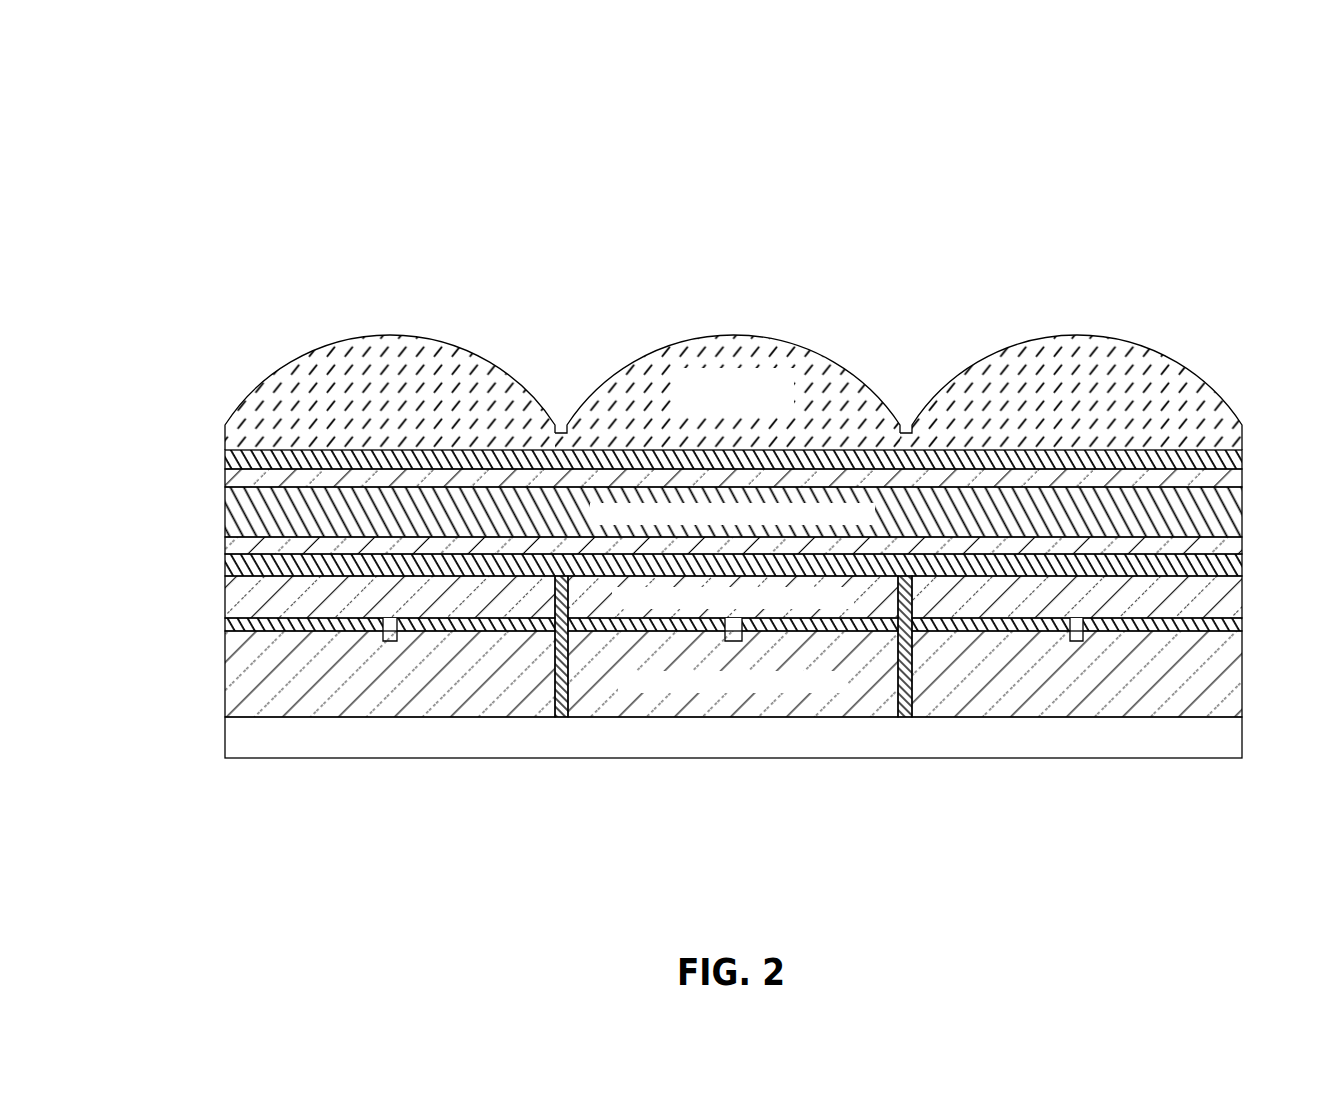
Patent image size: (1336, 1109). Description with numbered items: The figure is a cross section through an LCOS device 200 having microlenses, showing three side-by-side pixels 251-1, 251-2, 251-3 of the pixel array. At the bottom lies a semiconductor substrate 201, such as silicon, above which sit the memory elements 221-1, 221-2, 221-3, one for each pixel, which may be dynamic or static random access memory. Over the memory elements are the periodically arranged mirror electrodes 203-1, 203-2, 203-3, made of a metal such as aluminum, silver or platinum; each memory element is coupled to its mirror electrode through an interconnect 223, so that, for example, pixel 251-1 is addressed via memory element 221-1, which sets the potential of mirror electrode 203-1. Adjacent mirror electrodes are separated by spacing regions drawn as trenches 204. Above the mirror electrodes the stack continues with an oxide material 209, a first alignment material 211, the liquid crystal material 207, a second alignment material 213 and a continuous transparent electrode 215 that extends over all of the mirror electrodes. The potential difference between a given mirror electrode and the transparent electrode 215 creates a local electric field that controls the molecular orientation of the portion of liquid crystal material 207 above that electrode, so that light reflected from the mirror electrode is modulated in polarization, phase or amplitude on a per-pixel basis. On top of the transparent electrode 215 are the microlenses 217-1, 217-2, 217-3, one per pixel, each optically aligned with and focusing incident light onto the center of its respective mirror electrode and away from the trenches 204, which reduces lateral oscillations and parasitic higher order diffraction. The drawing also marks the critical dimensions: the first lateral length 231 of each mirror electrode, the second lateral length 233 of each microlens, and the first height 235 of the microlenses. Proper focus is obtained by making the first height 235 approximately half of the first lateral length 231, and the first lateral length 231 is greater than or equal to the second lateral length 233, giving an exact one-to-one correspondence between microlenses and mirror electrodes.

The LCOS device 200 is at (116, 86).
The semiconductor substrate 201 is at (733, 737).
The mirror electrode 203-1 is at (225, 590).
The mirror electrode 203-2 is at (733, 608).
The mirror electrode 203-3 is at (1243, 590).
The trench 204 is at (557, 686).
The liquid crystal material 207 is at (733, 512).
The oxide material 209 is at (225, 566).
The first alignment material 211 is at (225, 540).
The second alignment material 213 is at (225, 481).
The transparent electrode 215 is at (225, 461).
The microlens 217-1 is at (268, 376).
The microlens 217-2 is at (727, 392).
The microlens 217-3 is at (1195, 373).
The memory element 221-1 is at (225, 670).
The memory element 221-2 is at (733, 674).
The memory element 221-3 is at (1243, 670).
The interconnect 223 is at (1076, 642).
The first lateral length 231 is at (921, 605).
The second lateral length 233 is at (921, 433).
The first height 235 is at (1257, 345).
The pixel 251-1 is at (557, 333).
The pixel 251-2 is at (898, 333).
The pixel 251-3 is at (912, 333).